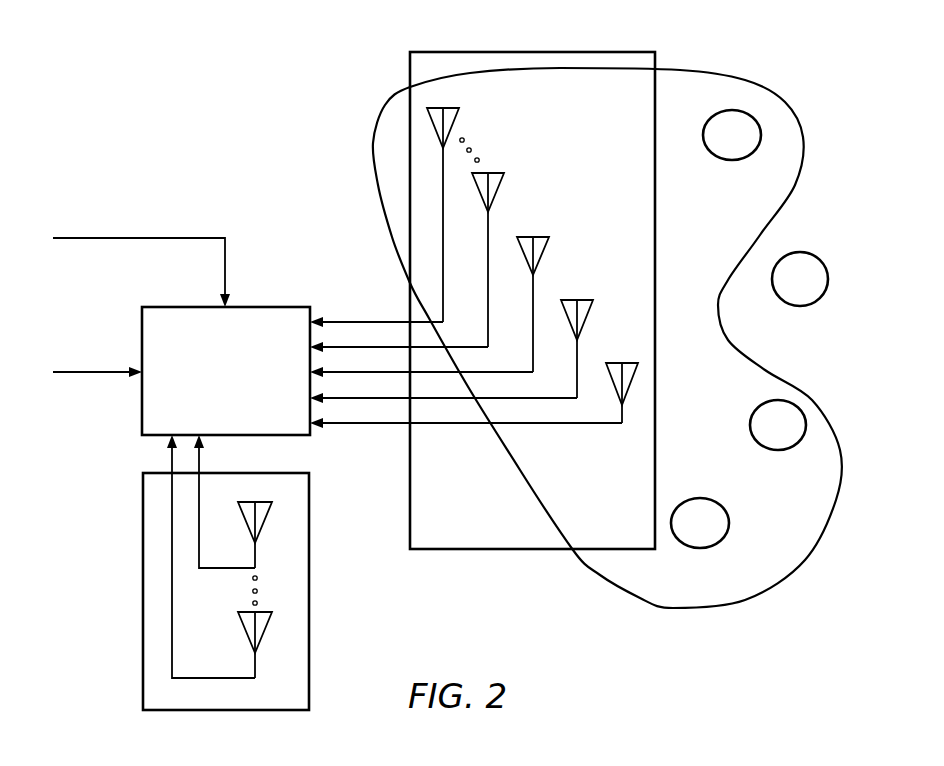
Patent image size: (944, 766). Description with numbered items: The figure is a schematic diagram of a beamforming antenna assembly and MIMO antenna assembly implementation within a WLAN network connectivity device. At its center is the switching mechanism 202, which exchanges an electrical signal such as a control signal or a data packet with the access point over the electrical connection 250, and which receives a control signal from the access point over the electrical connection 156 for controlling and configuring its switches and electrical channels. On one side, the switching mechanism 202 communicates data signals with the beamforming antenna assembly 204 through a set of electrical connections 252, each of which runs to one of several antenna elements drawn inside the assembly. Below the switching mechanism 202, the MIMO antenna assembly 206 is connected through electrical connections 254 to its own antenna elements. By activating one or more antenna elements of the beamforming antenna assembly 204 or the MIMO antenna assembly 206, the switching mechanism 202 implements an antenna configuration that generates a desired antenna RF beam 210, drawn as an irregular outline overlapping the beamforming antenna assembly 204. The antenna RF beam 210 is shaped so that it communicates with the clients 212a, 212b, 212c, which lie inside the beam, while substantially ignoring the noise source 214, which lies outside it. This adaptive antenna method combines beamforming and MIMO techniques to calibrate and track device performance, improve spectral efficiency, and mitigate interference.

The electrical connection 156 is at (143, 236).
The switching mechanism 202 is at (211, 406).
The beamforming antenna assembly 204 is at (410, 478).
The MIMO antenna assembly 206 is at (143, 590).
The antenna RF beam 210 is at (708, 72).
The client 212a is at (732, 160).
The client 212b is at (760, 404).
The client 212c is at (718, 503).
The noise source 214 is at (818, 258).
The electrical connection 250 is at (98, 370).
The electrical connection 252 is at (340, 321).
The electrical connection 254 is at (172, 460).